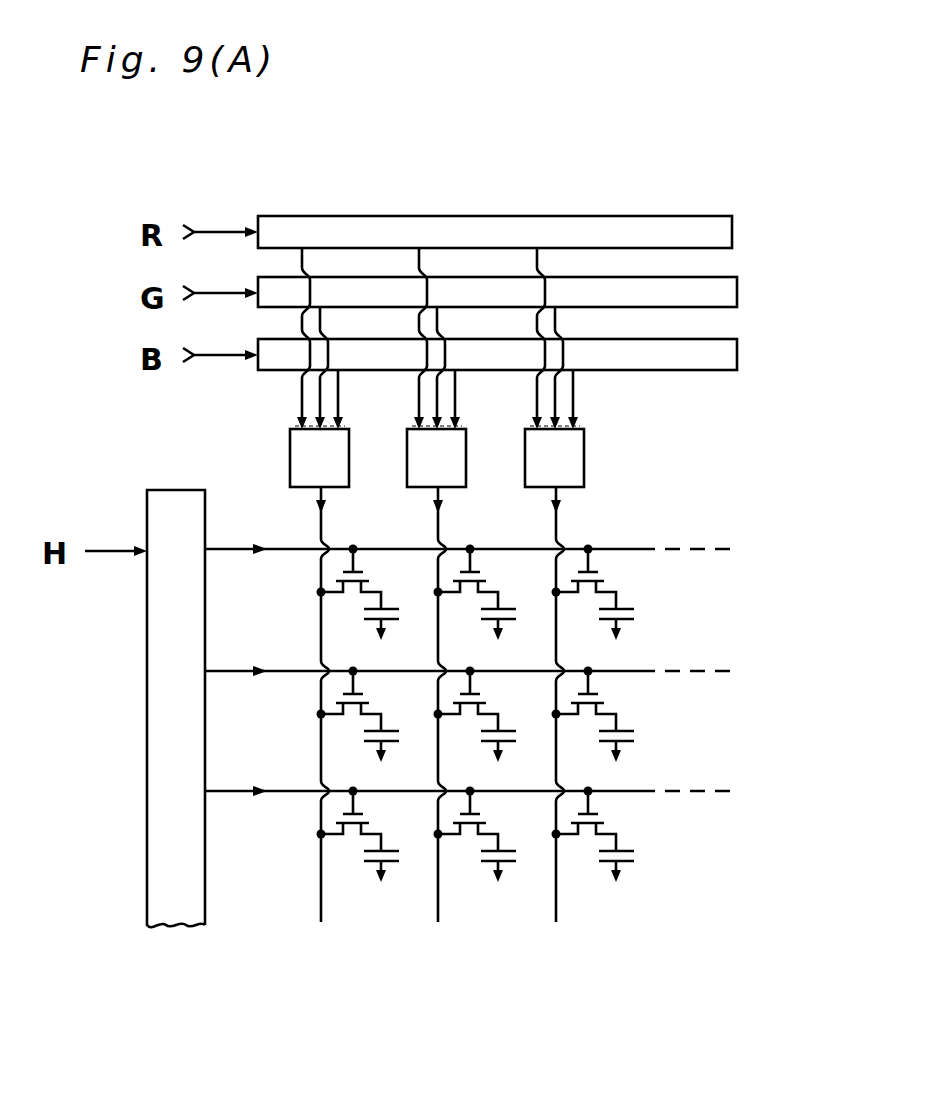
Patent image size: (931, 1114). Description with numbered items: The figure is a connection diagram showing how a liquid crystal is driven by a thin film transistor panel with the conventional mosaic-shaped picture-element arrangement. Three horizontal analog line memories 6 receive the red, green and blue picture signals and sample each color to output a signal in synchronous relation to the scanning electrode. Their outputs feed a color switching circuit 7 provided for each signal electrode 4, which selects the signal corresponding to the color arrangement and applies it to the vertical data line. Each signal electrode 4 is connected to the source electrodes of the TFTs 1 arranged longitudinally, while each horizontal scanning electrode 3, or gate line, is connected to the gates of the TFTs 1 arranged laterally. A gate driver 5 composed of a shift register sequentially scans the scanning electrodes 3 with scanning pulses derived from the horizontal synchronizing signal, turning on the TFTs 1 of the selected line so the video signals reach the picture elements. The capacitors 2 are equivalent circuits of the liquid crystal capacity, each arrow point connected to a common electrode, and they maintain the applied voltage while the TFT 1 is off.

The thin film transistor 1 is at (607, 812).
The capacitor 2 is at (635, 853).
The scanning electrode 3 is at (232, 548).
The signal electrode 4 is at (323, 528).
The gate driver 5 is at (150, 703).
The analog line memory 6 is at (633, 216).
The color switching circuit 7 is at (349, 456).